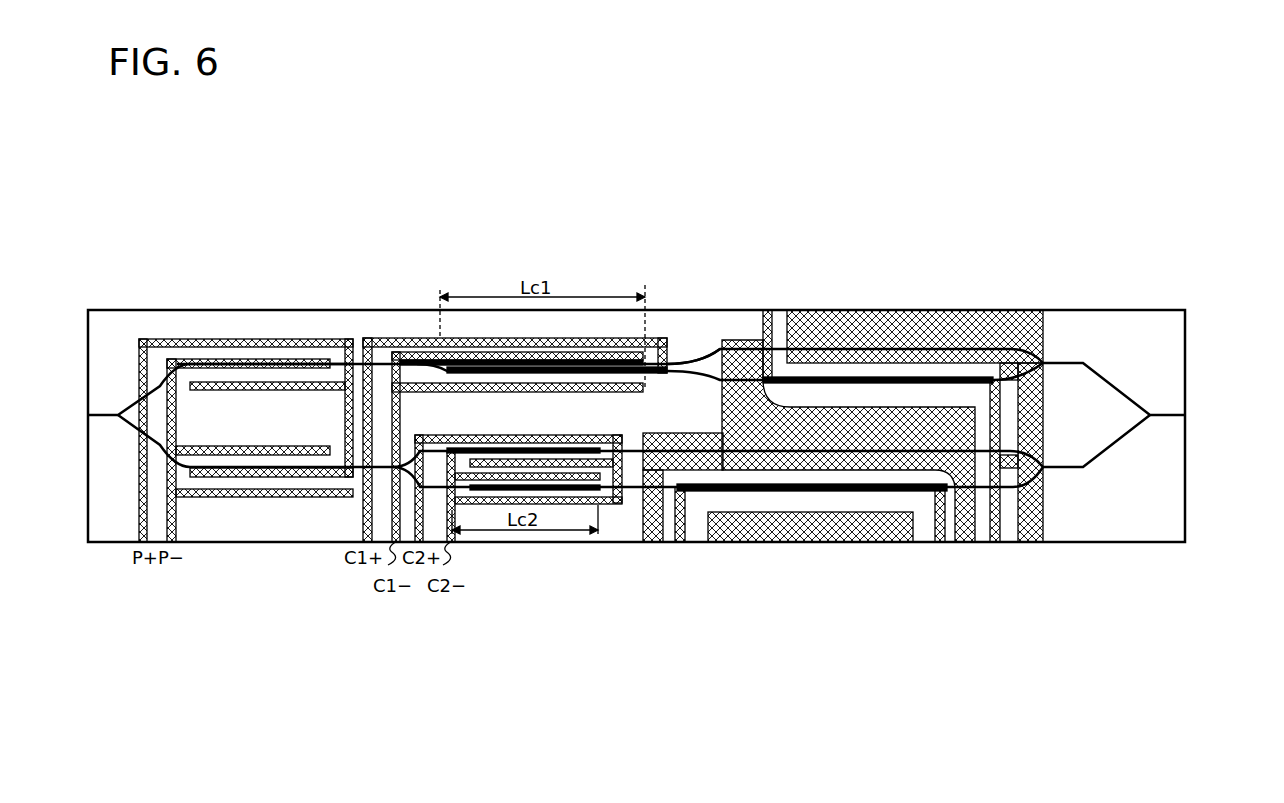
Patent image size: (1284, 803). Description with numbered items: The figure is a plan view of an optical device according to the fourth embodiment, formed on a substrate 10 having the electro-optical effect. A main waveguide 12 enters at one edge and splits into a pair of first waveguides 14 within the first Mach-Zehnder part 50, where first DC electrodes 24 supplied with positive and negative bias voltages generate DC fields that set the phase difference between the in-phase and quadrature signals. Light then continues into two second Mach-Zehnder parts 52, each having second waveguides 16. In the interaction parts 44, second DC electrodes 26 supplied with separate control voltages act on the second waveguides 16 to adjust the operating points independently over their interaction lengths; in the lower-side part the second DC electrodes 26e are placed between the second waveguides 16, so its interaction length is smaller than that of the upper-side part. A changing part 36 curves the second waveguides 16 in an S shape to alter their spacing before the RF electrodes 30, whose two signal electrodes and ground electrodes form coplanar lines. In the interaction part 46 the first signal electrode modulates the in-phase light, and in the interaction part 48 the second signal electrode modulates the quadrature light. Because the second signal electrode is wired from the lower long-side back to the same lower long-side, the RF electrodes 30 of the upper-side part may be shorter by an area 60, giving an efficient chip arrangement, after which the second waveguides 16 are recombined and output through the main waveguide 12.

The substrate 10 is at (1187, 476).
The main waveguide 12 is at (104, 412).
The first waveguides 14 is at (261, 377).
The second waveguides 16 is at (483, 353).
The first DC electrodes 24 is at (207, 355).
The second DC electrodes 26 is at (450, 337).
The second DC electrodes 26e is at (578, 474).
The RF electrodes 30 is at (625, 612).
The changing part 36 is at (692, 342).
The interaction part 44 is at (530, 389).
The interaction part 46 is at (995, 388).
The interaction part 48 is at (930, 493).
The first Mach-Zehnder part 50 is at (383, 660).
The second Mach-Zehnder parts 52 is at (1050, 660).
The area 60 is at (720, 411).